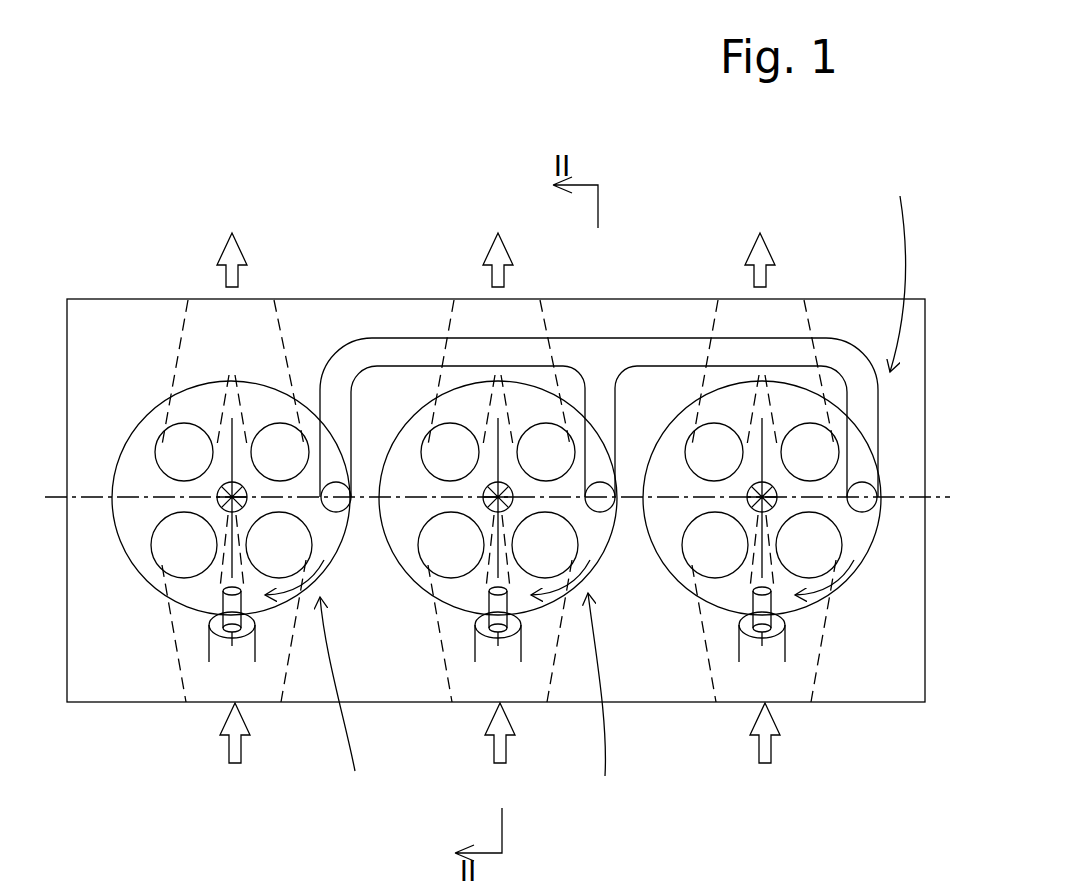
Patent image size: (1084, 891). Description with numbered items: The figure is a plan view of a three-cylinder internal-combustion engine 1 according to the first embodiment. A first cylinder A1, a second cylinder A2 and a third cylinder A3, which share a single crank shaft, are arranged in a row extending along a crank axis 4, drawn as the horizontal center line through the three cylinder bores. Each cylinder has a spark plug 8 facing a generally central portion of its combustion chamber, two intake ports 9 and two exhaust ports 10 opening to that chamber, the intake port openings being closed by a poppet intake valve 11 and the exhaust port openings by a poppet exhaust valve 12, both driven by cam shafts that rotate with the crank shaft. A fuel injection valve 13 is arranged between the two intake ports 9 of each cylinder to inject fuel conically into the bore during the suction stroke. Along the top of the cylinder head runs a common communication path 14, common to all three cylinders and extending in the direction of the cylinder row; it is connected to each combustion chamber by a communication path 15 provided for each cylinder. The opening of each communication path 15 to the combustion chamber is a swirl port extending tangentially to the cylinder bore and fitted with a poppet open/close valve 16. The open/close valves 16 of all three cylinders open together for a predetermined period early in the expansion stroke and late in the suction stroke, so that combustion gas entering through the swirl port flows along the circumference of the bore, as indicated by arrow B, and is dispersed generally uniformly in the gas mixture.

The three-cylinder internal-combustion engine 1 is at (805, 292).
The crank axis 4 is at (913, 507).
The spark plug 8 is at (217, 497).
The intake port 9 is at (705, 653).
The exhaust port 10 is at (260, 397).
The poppet intake valve 11 is at (267, 550).
The poppet exhaust valve 12 is at (278, 447).
The fuel injection valve 13 is at (217, 638).
The common communication path 14 is at (660, 357).
The communication path 15 is at (320, 403).
The poppet open/close valve 16 is at (340, 512).
The first cylinder A1 is at (892, 267).
The second cylinder A2 is at (602, 702).
The third cylinder A3 is at (347, 702).
The arrow indicating swirling flow B is at (300, 597).